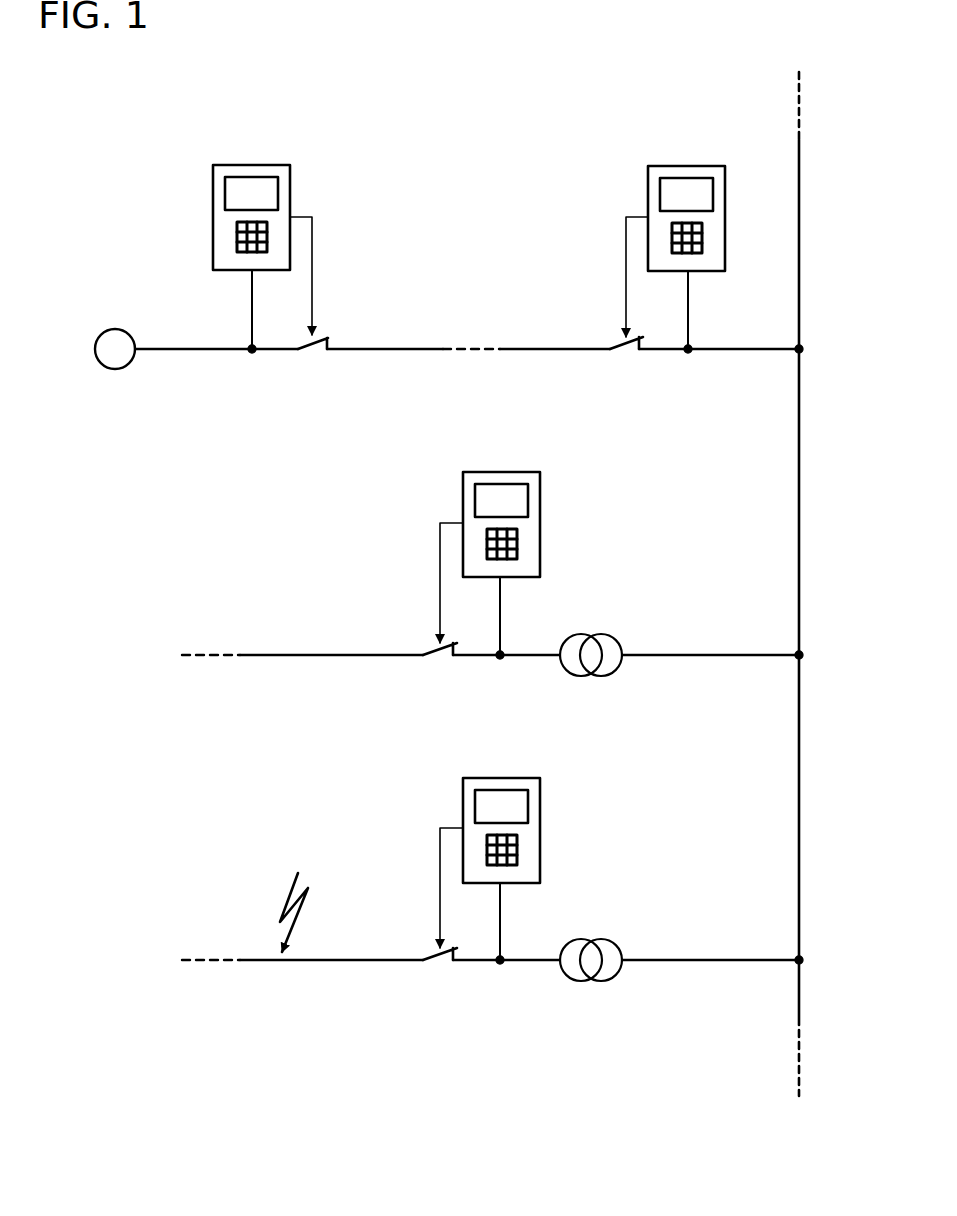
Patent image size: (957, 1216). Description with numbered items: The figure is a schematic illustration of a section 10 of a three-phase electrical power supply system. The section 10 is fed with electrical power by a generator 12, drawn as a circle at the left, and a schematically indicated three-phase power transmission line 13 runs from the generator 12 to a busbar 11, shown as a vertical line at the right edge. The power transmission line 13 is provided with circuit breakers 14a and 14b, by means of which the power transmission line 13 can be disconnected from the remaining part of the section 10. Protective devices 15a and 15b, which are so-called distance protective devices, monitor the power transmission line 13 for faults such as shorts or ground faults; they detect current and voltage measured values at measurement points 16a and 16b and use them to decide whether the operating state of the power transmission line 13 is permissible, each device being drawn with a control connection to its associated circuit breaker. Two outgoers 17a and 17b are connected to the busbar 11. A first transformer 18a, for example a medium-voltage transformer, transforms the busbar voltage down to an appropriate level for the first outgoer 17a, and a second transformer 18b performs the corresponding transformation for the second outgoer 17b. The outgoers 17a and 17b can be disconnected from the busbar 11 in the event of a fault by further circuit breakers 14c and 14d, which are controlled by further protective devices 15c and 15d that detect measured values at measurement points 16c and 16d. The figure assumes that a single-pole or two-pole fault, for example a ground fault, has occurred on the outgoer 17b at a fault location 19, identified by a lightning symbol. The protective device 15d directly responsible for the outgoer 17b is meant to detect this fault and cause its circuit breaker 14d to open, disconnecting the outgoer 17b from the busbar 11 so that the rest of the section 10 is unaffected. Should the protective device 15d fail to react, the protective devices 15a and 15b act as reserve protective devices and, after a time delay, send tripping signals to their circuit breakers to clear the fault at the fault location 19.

The section of the electrical power supply system 10 is at (472, 158).
The busbar 11 is at (801, 516).
The generator 12 is at (113, 328).
The power transmission line 13 is at (532, 353).
The circuit breaker 14a is at (322, 337).
The circuit breaker 14b is at (615, 340).
The circuit breaker 14c is at (430, 648).
The circuit breaker 14d is at (430, 953).
The protective device 15a is at (250, 164).
The protective device 15b is at (688, 165).
The protective device 15c is at (540, 488).
The protective device 15d is at (540, 795).
The measurement point 16a is at (252, 353).
The measurement point 16b is at (688, 353).
The measurement point 16c is at (500, 658).
The measurement point 16d is at (500, 963).
The outgoer 17a is at (680, 530).
The outgoer 17b is at (680, 834).
The first transformer 18a is at (594, 636).
The second transformer 18b is at (594, 941).
The fault location 19 is at (292, 876).